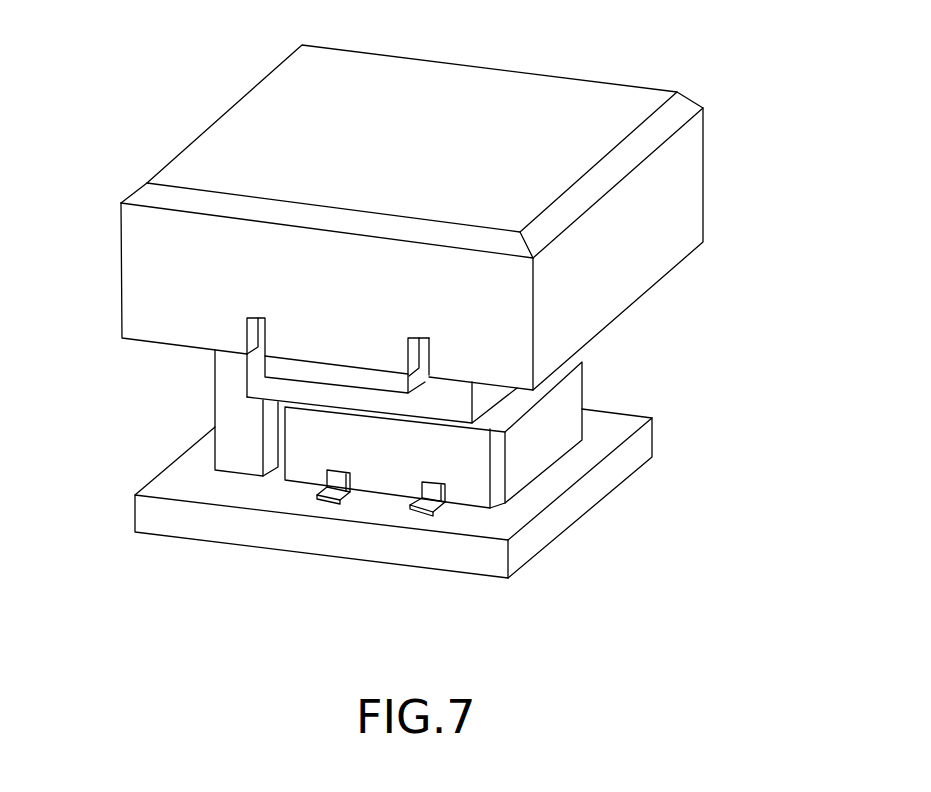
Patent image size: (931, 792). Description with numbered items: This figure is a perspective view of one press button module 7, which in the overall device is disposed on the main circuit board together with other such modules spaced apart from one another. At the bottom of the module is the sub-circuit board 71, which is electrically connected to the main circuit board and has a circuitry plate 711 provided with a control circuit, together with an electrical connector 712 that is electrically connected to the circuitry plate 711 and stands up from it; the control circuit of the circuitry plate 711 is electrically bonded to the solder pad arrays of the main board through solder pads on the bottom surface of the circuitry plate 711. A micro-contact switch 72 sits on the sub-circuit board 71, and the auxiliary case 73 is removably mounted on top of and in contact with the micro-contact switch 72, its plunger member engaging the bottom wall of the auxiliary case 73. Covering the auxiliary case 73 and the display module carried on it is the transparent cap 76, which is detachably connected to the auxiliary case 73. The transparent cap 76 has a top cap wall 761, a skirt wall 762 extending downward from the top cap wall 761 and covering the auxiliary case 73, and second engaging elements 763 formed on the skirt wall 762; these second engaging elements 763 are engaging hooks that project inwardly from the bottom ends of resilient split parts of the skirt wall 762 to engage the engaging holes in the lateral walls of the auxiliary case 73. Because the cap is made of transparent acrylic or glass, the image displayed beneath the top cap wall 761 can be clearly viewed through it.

The press button module 7 is at (196, 84).
The transparent cap 76 is at (800, 65).
The top cap wall 761 is at (634, 103).
The skirt wall 762 is at (683, 193).
The second engaging elements 763 is at (422, 376).
The auxiliary case 73 is at (260, 383).
The micro-contact switch 72 is at (557, 437).
The sub-circuit board 71 is at (96, 420).
The circuitry plate 711 is at (163, 485).
The electrical connector 712 is at (225, 457).